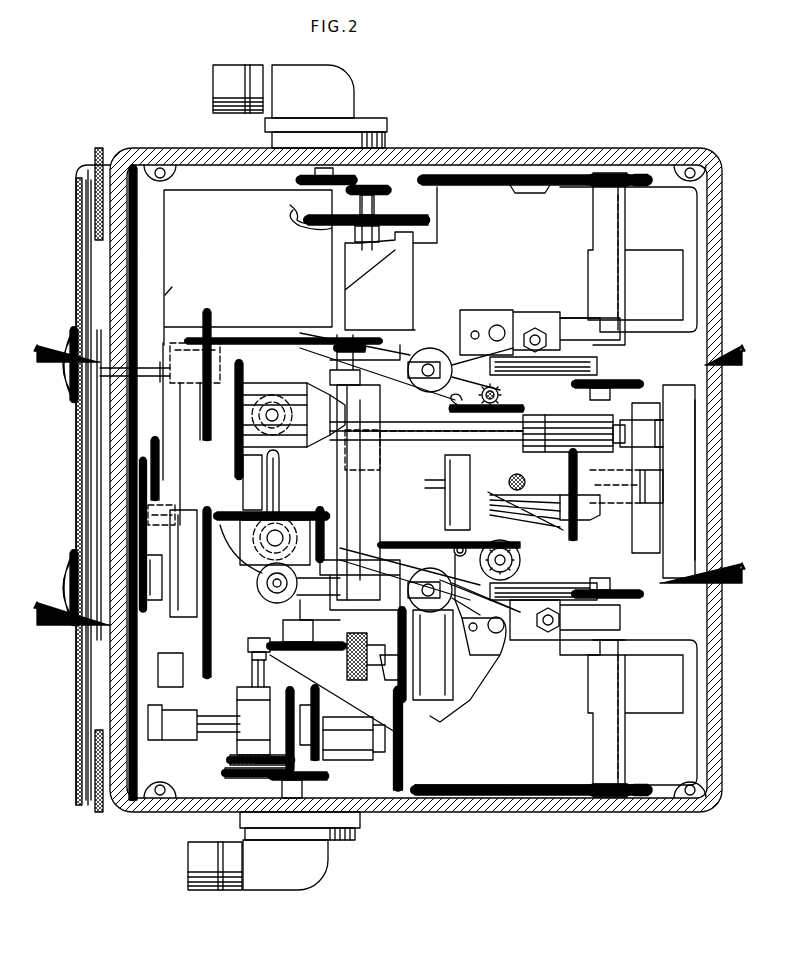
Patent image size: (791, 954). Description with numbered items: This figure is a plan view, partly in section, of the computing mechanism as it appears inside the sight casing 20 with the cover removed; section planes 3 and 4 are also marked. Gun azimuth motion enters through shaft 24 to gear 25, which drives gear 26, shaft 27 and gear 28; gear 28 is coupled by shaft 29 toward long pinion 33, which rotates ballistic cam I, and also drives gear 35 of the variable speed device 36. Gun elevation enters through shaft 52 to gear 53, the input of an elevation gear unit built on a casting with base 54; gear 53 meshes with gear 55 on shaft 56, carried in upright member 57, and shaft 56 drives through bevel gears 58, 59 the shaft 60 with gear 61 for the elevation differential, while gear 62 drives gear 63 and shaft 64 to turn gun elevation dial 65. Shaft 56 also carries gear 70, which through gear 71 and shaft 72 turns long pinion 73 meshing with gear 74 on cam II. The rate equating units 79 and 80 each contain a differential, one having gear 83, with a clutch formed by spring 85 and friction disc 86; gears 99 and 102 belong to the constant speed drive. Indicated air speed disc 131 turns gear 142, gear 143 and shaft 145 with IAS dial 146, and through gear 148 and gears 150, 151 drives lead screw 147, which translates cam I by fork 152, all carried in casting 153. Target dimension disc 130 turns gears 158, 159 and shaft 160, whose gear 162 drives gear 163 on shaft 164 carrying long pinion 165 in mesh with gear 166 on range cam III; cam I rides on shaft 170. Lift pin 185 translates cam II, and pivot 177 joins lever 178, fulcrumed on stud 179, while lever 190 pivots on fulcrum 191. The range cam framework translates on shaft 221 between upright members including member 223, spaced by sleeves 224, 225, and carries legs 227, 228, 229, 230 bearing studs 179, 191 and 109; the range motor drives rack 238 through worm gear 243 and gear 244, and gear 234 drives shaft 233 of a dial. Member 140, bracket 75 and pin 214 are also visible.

The sight casing 20 is at (465, 152).
The shaft 24 is at (334, 173).
The gear 25 is at (300, 180).
The gear 26 is at (388, 192).
The shaft 27 is at (375, 207).
The gear 28 is at (407, 215).
The shaft 29 is at (360, 233).
The long pinion 33 is at (255, 362).
The gear 35 is at (292, 210).
The variable speed device 36 is at (254, 247).
The shaft 52 is at (302, 795).
The gear 53 is at (328, 774).
The base 54 is at (292, 690).
The gear 55 is at (260, 778).
The shaft 56 is at (252, 678).
The upright member 57 is at (270, 700).
The bevel gear 58 is at (232, 763).
The bevel gear 59 is at (287, 715).
The shaft 60 is at (325, 712).
The gear 61 is at (393, 709).
The gear 62 is at (320, 725).
The gear 63 is at (308, 705).
The shaft 64 is at (183, 738).
The gun elevation dial 65 is at (183, 687).
The gear 70 is at (256, 642).
The gear 71 is at (290, 642).
The shaft 72 is at (308, 627).
The long pinion 73 is at (338, 492).
The gear 74 is at (290, 497).
The bracket 75 is at (400, 560).
The multiplier unit 79 is at (688, 244).
The rate equating member 80 is at (690, 760).
The gear 83 is at (404, 652).
The spring 85 is at (392, 680).
The friction disc 86 is at (416, 622).
The gear 99 is at (612, 798).
The gear 102 is at (641, 798).
The stud 109 is at (585, 368).
The target dimension adjustment disc 130 is at (99, 150).
The indicated air speed disc 131 is at (99, 810).
The bracket 140 is at (186, 562).
The gear 142 is at (98, 692).
The gear 143 is at (88, 672).
The shaft 145 is at (170, 617).
The IAS dial 146 is at (211, 648).
The lead screw 147 is at (156, 497).
The gear 148 is at (220, 525).
The gear 150 is at (139, 503).
The gear 151 is at (136, 462).
The fork 152 is at (248, 482).
The casting 153 is at (185, 519).
The gear 158 is at (137, 205).
The gear 159 is at (168, 290).
The shaft 160 is at (203, 330).
The gear 162 is at (210, 322).
The gear 163 is at (215, 445).
The shaft 164 is at (465, 432).
The long pinion 165 is at (540, 452).
The gear 166 is at (569, 468).
The shaft 170 is at (178, 434).
The pivot 177 is at (432, 362).
The lever 178 is at (395, 360).
The shiftable fulcrum 179 is at (365, 352).
The lift pin 185 is at (279, 468).
The lever 190 is at (378, 600).
The fulcrum 191 is at (370, 582).
The pin 214 is at (506, 479).
The shaft 221 is at (445, 483).
The upright member 223 is at (690, 487).
The sleeve 224 is at (448, 490).
The sleeve 225 is at (570, 487).
The leg 227 is at (340, 377).
The leg 228 is at (610, 394).
The leg 229 is at (450, 572).
The leg 230 is at (608, 574).
The shaft 233 is at (510, 406).
The gear 234 is at (498, 392).
The rack 238 is at (510, 550).
The worm gear 243 is at (520, 560).
The gear 244 is at (517, 578).
The section line 3 is at (389, 344).
The section line 4 is at (389, 583).